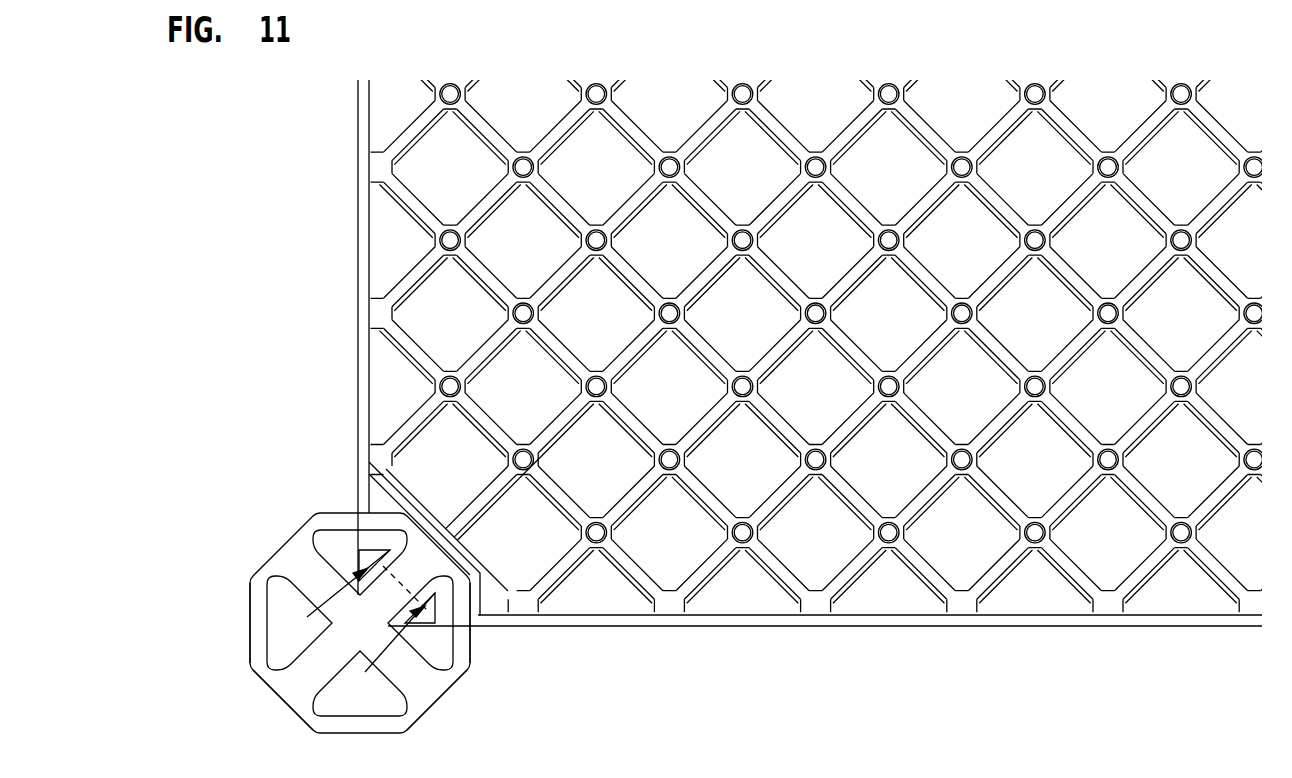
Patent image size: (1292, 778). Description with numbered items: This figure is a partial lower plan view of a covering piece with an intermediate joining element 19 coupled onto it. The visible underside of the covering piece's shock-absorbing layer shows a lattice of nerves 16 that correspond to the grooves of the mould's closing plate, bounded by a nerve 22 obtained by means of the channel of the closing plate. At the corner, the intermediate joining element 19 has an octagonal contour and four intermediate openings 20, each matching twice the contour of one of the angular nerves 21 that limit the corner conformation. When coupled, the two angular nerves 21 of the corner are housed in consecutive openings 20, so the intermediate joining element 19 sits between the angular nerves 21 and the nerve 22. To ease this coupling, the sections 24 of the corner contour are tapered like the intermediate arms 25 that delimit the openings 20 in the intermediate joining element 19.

The nerves 16 is at (703, 573).
The intermediate joining element 19 is at (252, 704).
The intermediate openings 20 is at (283, 595).
The angular nerves 21 is at (378, 537).
The nerve 22 is at (473, 590).
The sections of the contour 24 is at (258, 620).
The intermediate arms 25 is at (320, 662).